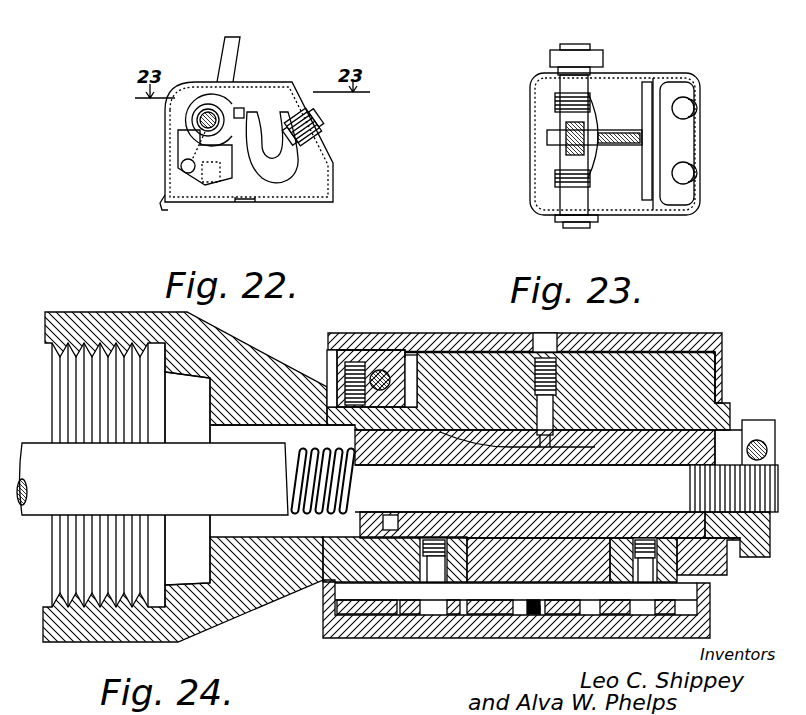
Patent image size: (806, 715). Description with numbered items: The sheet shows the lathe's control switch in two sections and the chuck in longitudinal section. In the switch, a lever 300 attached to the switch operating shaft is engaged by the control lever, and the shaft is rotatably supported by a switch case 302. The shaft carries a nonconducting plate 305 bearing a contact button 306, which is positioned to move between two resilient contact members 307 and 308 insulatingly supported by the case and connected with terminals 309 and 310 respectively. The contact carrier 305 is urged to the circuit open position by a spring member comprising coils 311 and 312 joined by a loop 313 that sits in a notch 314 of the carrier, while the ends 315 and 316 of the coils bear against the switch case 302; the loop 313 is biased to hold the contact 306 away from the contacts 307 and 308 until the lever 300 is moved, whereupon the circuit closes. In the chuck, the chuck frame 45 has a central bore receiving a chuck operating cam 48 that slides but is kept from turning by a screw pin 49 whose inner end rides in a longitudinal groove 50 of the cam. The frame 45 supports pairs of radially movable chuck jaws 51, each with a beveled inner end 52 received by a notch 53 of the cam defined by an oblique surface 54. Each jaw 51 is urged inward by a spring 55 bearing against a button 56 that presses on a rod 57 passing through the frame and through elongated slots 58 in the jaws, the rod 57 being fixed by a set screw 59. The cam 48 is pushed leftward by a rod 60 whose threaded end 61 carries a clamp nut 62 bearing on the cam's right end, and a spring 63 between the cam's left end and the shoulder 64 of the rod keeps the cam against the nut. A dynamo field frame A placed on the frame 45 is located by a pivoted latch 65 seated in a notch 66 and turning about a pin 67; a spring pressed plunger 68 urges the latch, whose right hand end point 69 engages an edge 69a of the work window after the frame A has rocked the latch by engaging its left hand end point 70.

In FIG. 22, the lever 300 is at (226, 42).
In FIG. 22, the switch case 302 is at (334, 180).
In FIG. 22, the nonconducting plate 305 is at (180, 148).
In FIG. 23, the nonconducting plate 305 is at (547, 138).
In FIG. 22, the contact button 306 is at (180, 166).
In FIG. 22, the resilient contact member 307 is at (235, 178).
In FIG. 23, the resilient contact member 307 is at (647, 126).
In FIG. 23, the resilient contact member 308 is at (598, 148).
In FIG. 22, the terminal 309 is at (330, 124).
In FIG. 23, the terminal 309 is at (700, 107).
In FIG. 23, the terminal 310 is at (700, 178).
In FIG. 23, the coil 311 is at (555, 95).
In FIG. 23, the coil 312 is at (567, 183).
In FIG. 22, the loop 313 is at (240, 107).
In FIG. 23, the loop 313 is at (597, 122).
In FIG. 23, the notch 314 is at (600, 140).
In FIG. 22, the end 315 is at (166, 196).
In FIG. 23, the end 315 is at (556, 99).
In FIG. 23, the end 316 is at (556, 177).
In FIG. 24, the chuck frame 45 is at (64, 322).
In FIG. 24, the chuck operating cam 48 is at (653, 440).
In FIG. 24, the screw pin 49 is at (545, 345).
In FIG. 24, the longitudinal groove 50 is at (605, 440).
In FIG. 24, the chuck jaws 51 is at (395, 542).
In FIG. 24, the beveled inner end 52 is at (440, 542).
In FIG. 24, the notch 53 is at (382, 522).
In FIG. 24, the oblique surface 54 is at (488, 512).
In FIG. 24, the spring 55 is at (433, 543).
In FIG. 24, the button 56 is at (437, 565).
In FIG. 24, the rod 57 is at (510, 597).
In FIG. 24, the elongated holes or slots 58 is at (700, 595).
In FIG. 24, the set screw 59 is at (540, 605).
In FIG. 24, the rod 60 is at (190, 517).
In FIG. 24, the threaded end 61 is at (778, 470).
In FIG. 24, the clamp nut 62 is at (765, 422).
In FIG. 24, the spring 63 is at (300, 588).
In FIG. 24, the shoulder 64 is at (285, 455).
In FIG. 24, the pivoted latch 65 is at (357, 350).
In FIG. 24, the notch 66 is at (412, 360).
In FIG. 24, the pin 67 is at (380, 370).
In FIG. 24, the spring pressed plunger 68 is at (350, 385).
In FIG. 24, the right hand end point 69 is at (400, 350).
In FIG. 24, the edge 69a is at (405, 355).
In FIG. 24, the left hand end point 70 is at (337, 378).
In FIG. 24, the dynamo field frame A is at (480, 340).